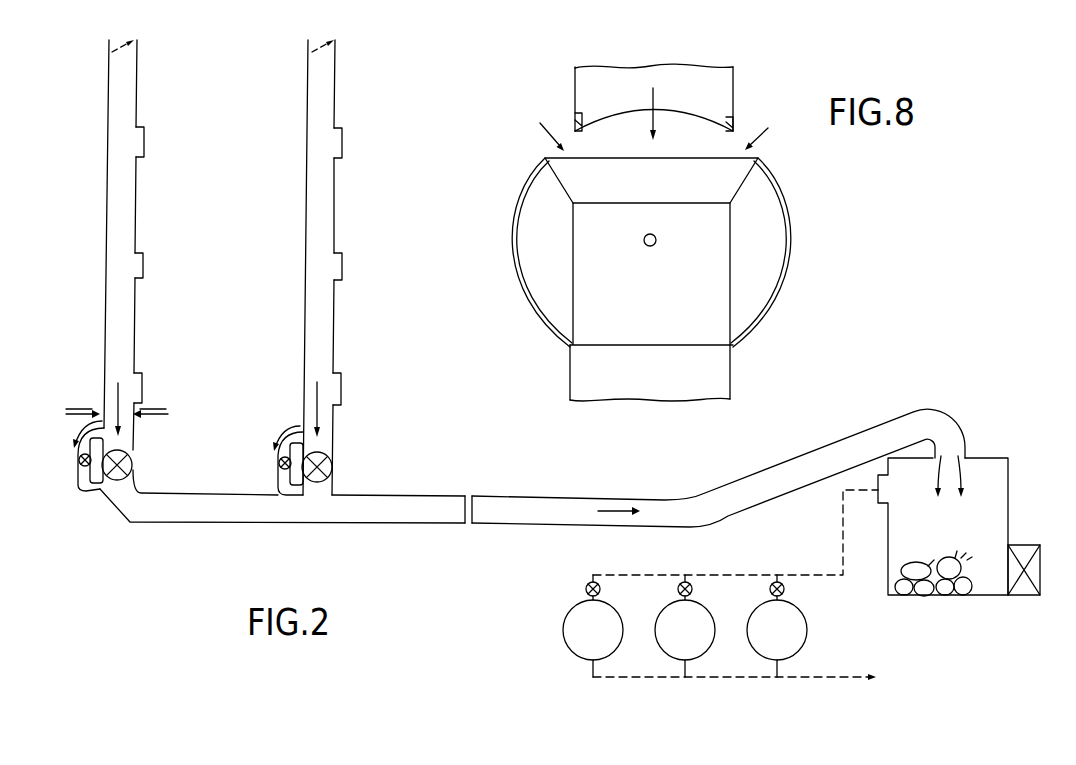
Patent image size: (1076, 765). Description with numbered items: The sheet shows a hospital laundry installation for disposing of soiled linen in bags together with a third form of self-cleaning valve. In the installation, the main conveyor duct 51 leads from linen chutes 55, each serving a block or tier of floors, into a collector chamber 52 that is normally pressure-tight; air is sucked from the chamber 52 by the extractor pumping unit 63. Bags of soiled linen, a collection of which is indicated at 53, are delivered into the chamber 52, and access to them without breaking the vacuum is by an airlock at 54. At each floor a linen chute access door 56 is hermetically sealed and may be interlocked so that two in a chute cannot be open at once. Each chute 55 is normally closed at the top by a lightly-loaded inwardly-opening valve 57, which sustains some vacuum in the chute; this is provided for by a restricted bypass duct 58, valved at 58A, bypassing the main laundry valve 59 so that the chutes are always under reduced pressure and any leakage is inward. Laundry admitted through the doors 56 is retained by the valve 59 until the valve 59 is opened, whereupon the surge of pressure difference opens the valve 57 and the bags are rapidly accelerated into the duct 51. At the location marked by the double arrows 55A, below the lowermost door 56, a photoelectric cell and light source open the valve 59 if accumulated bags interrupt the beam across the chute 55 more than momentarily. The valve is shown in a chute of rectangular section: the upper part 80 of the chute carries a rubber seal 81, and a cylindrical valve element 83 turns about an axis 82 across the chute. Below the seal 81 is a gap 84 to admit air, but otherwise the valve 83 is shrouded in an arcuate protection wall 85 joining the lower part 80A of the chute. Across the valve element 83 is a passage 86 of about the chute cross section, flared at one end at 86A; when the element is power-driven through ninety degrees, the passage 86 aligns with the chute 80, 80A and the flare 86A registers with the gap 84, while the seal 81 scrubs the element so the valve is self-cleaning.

In FIG. 2, the main conveyor duct 51 is at (552, 512).
In FIG. 2, the collector chamber 52 is at (1010, 486).
In FIG. 2, the collection of bags of soiled linen 53 is at (951, 560).
In FIG. 2, the airlock 54 is at (1025, 594).
In FIG. 2, the linen chute 55 is at (125, 322).
In FIG. 2, the photoelectric cell location 55A is at (130, 400).
In FIG. 2, the linen chute access door 56 is at (143, 145).
In FIG. 2, the inwardly-opening valve 57 is at (136, 38).
In FIG. 2, the bypass duct 58 is at (86, 494).
In FIG. 2, the bypass valve 58A is at (80, 462).
In FIG. 2, the main laundry valve 59 is at (133, 467).
In FIG. 2, the extractor pumping unit 63 is at (816, 630).
In FIG. 8, the upper part of the chute 80 is at (697, 100).
In FIG. 8, the lower part of the chute 80A is at (676, 386).
In FIG. 8, the rubber seal 81 is at (734, 121).
In FIG. 8, the axis of the valve element 82 is at (657, 241).
In FIG. 8, the valve element 83 is at (519, 272).
In FIG. 8, the gap 84 is at (656, 124).
In FIG. 8, the arcuate protection wall 85 is at (538, 323).
In FIG. 8, the passage 86 is at (630, 300).
In FIG. 8, the flare 86A is at (563, 187).